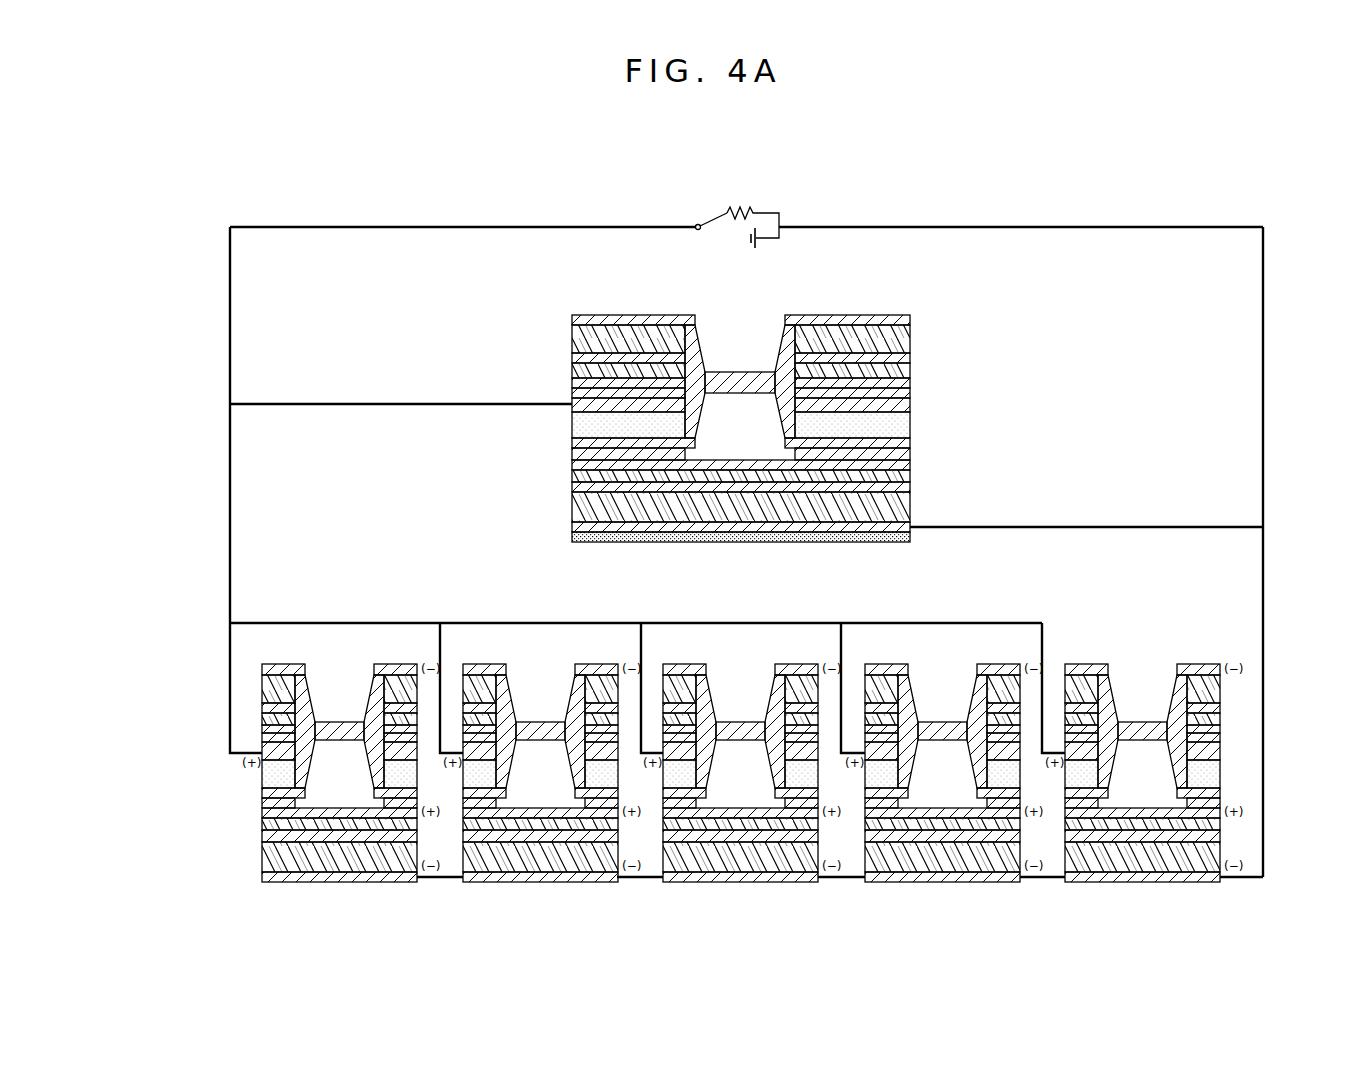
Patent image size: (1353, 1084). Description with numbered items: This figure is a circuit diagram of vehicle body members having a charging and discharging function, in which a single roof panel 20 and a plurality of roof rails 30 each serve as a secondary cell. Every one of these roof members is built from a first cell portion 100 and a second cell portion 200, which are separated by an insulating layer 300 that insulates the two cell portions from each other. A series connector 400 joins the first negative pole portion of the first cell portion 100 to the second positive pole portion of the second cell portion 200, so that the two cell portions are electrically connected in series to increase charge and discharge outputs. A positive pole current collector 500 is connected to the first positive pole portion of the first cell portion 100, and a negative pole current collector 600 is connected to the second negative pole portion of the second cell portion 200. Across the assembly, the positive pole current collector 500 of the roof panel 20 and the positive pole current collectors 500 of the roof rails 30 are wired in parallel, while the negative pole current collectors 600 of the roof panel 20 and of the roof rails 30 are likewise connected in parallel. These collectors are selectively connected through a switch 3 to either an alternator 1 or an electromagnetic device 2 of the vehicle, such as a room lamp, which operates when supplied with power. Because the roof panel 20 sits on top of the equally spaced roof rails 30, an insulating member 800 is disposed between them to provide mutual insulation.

The alternator 1 is at (759, 244).
The electromagnetic device 2 is at (740, 211).
The switch 3 is at (697, 224).
The roof panel 20 is at (740, 412).
The roof rails 30 is at (1016, 655).
The first cell portion 100 is at (918, 374).
The second cell portion 200 is at (566, 497).
The insulating layer 300 is at (912, 422).
The series connector 400 is at (731, 350).
The positive pole current collector 500 is at (371, 403).
The negative pole current collector 600 is at (1093, 527).
The insulating member 800 is at (912, 540).